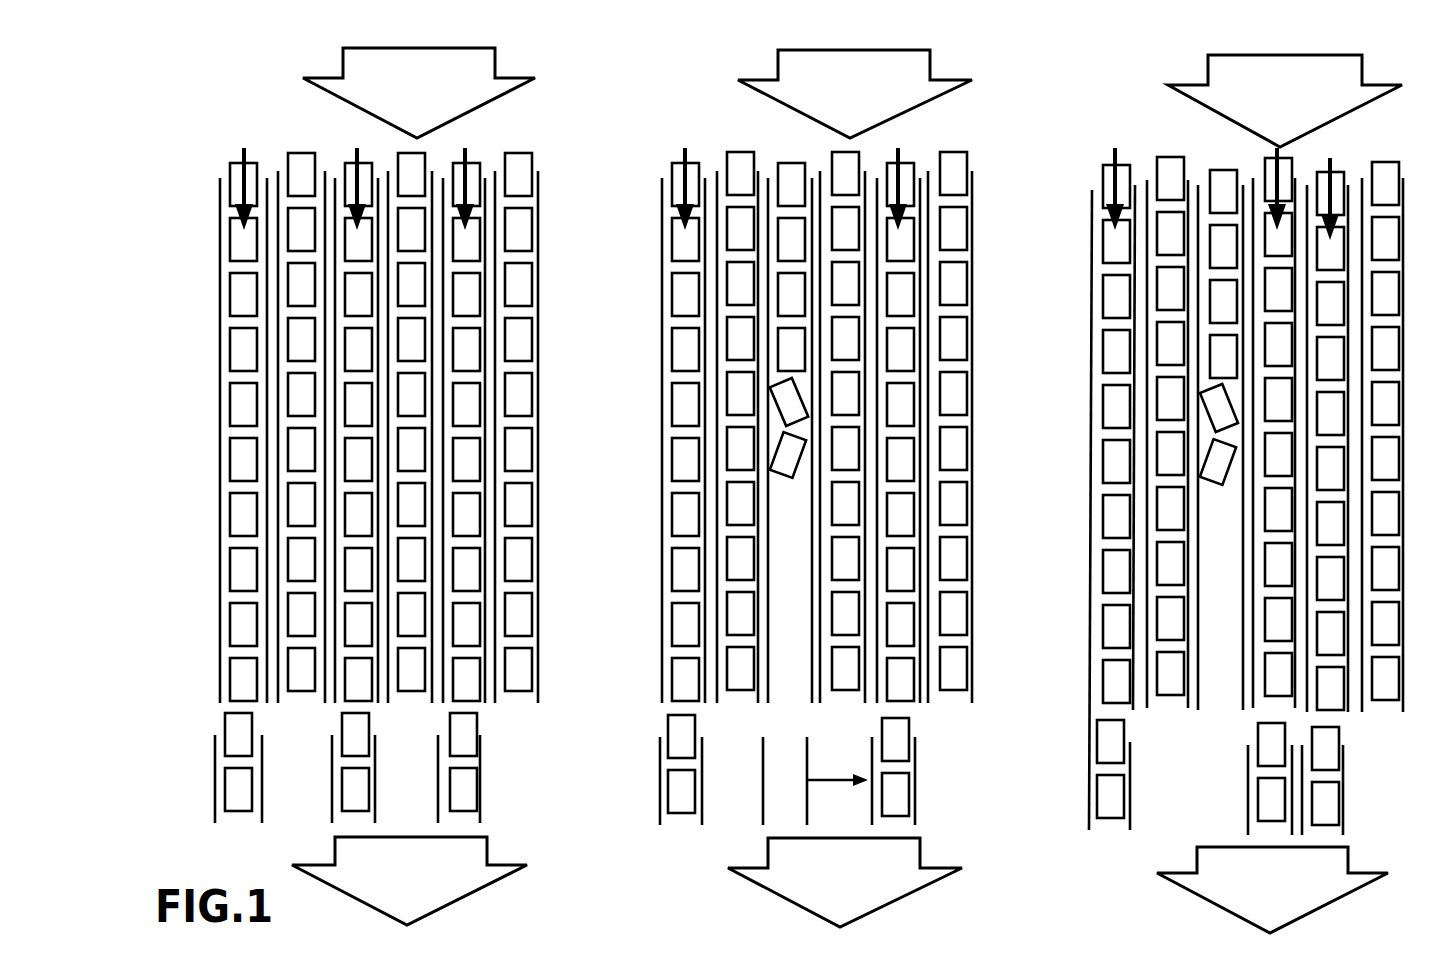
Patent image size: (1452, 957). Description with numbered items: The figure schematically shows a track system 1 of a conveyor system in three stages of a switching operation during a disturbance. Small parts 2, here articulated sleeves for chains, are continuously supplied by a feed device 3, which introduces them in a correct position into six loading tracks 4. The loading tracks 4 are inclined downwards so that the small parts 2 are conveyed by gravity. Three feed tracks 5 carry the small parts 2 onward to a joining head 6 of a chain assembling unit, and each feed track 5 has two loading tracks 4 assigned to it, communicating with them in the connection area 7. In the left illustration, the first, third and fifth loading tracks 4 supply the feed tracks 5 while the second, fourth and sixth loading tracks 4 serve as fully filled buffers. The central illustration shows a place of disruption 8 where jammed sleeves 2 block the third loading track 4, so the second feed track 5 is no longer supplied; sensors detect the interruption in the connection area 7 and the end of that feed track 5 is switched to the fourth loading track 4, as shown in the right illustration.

The track system 1 is at (205, 403).
The small parts 2 is at (245, 455).
The feed device 3 is at (495, 60).
The loading tracks 4 is at (220, 195).
The feed tracks 5 is at (215, 787).
The joining head 6 is at (487, 853).
The connection area 7 is at (208, 712).
The place of disruption 8 is at (775, 423).